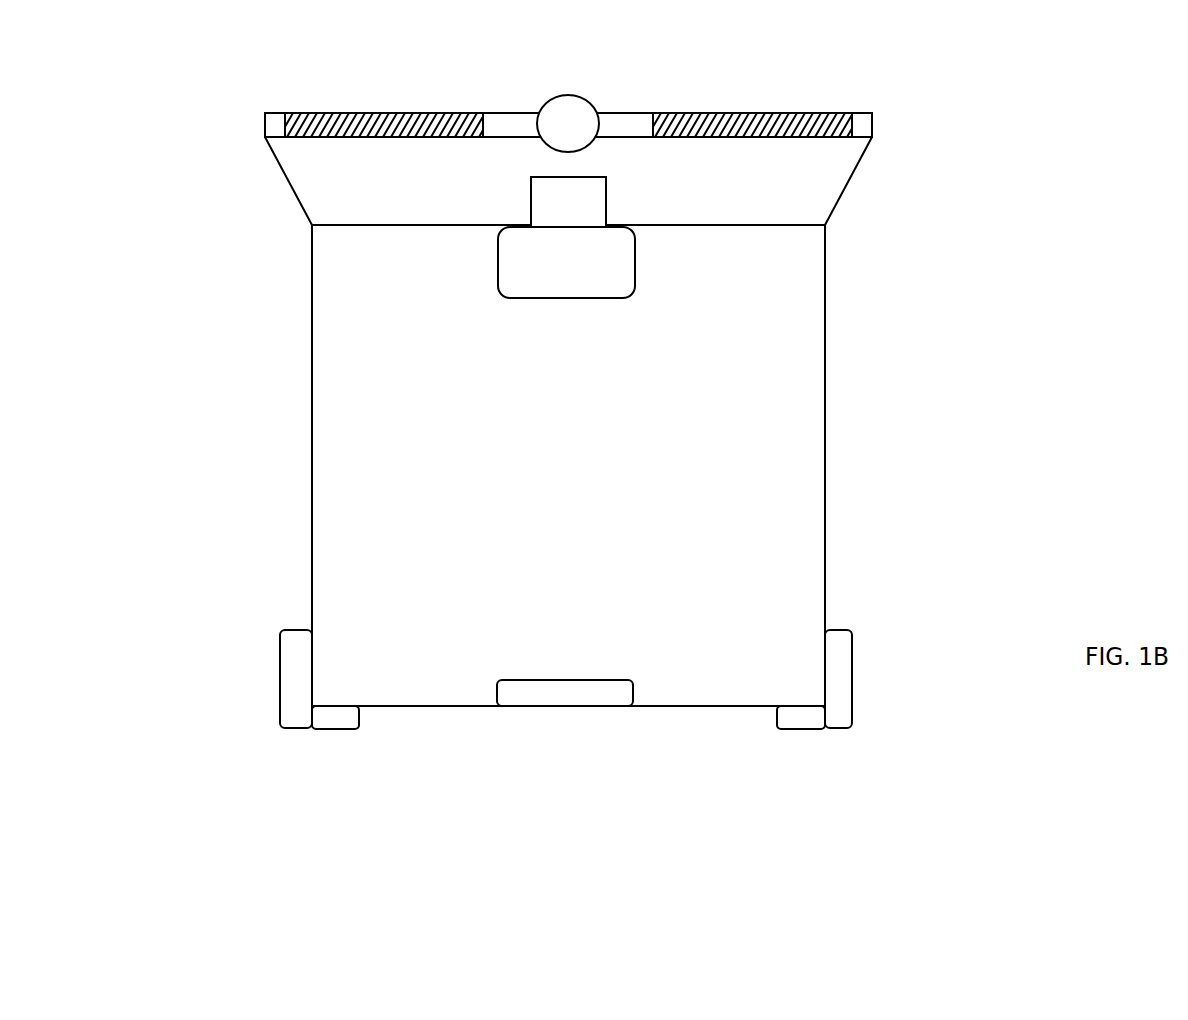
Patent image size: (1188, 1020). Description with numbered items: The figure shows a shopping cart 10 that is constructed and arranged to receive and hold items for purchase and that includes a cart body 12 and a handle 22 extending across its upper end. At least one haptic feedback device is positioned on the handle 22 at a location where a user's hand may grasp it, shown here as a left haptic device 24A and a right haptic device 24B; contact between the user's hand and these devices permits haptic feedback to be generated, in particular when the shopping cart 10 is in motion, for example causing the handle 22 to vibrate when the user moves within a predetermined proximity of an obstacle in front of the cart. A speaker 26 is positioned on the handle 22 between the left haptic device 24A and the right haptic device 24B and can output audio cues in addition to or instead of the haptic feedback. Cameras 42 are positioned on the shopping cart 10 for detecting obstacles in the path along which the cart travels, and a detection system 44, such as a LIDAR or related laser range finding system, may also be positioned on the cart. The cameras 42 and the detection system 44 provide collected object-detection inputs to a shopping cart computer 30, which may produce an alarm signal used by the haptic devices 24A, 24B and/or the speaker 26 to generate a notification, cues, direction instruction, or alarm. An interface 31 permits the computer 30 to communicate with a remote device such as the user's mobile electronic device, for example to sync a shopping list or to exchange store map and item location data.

The shopping cart 10 is at (910, 80).
The cart body 12 is at (832, 439).
The handle 22 is at (268, 125).
The left haptic device 24A is at (360, 120).
The right haptic device 24B is at (753, 112).
The speaker 26 is at (572, 113).
The shopping cart computer 30 is at (566, 262).
The interface 31 is at (568, 202).
The cameras 42 is at (326, 729).
The detection system 44 is at (532, 678).